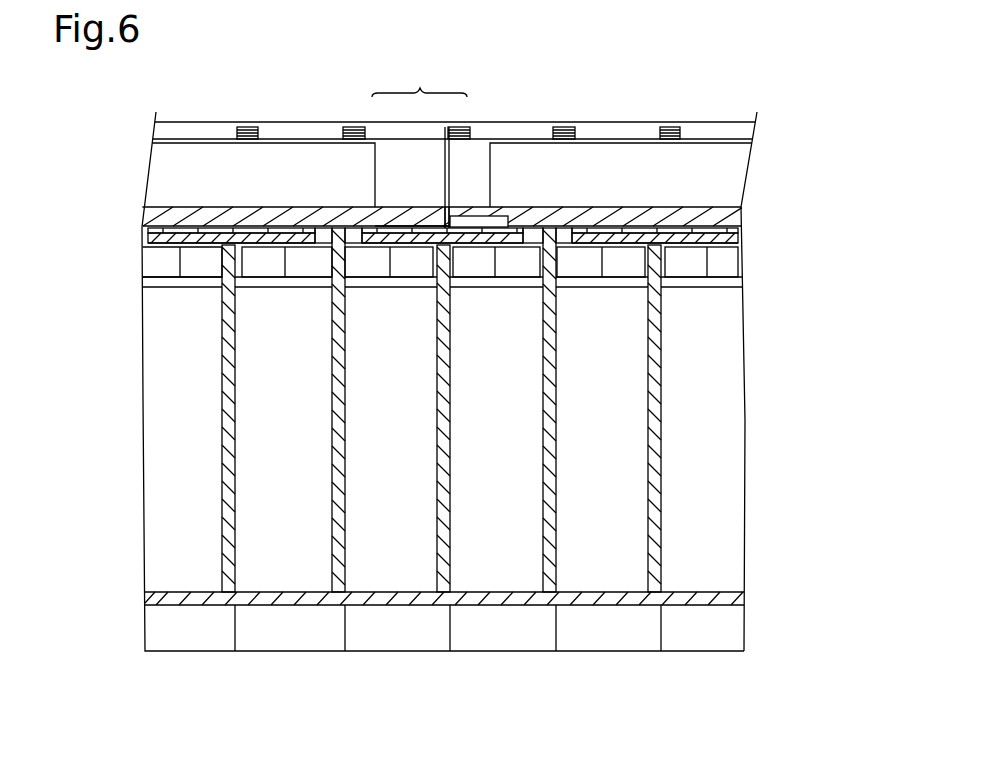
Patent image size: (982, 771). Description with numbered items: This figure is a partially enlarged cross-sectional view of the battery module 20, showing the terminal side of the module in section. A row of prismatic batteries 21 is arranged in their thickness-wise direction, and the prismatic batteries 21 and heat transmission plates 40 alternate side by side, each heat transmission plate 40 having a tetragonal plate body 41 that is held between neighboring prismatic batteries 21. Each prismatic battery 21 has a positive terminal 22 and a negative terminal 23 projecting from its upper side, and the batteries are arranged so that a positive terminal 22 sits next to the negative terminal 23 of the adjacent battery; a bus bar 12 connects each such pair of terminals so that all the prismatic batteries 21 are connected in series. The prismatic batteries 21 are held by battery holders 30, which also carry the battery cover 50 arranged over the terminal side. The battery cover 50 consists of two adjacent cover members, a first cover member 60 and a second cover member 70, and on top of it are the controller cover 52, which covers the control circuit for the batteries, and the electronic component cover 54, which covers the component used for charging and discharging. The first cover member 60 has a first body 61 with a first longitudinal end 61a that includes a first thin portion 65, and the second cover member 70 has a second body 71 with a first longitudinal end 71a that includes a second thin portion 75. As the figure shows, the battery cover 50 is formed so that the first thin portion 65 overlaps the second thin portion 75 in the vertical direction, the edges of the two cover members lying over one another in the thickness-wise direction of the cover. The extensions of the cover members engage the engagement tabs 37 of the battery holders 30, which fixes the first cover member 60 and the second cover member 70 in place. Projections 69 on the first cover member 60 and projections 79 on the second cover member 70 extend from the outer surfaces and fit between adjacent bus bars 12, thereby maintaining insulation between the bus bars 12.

The battery module 20 is at (104, 143).
The prismatic battery 21 is at (640, 352).
The positive terminal 22 is at (735, 264).
The negative terminal 23 is at (582, 265).
The bus bar 12 is at (268, 240).
The battery holder 30 is at (150, 653).
The engagement tab 37 is at (465, 126).
The heat transmission plate 40 is at (450, 412).
The body 41 is at (453, 483).
The battery cover 50 is at (419, 77).
The controller cover 52 is at (273, 139).
The electronic component cover 54 is at (672, 150).
The first cover member 60 is at (398, 155).
The first body 61 is at (152, 217).
The first longitudinal end 61a is at (503, 220).
The first thin portion 65 is at (446, 210).
The projection 69 is at (352, 235).
The second cover member 70 is at (463, 153).
The second body 71 is at (735, 222).
The first longitudinal end 71a is at (440, 215).
The second thin portion 75 is at (485, 221).
The projection 79 is at (552, 232).